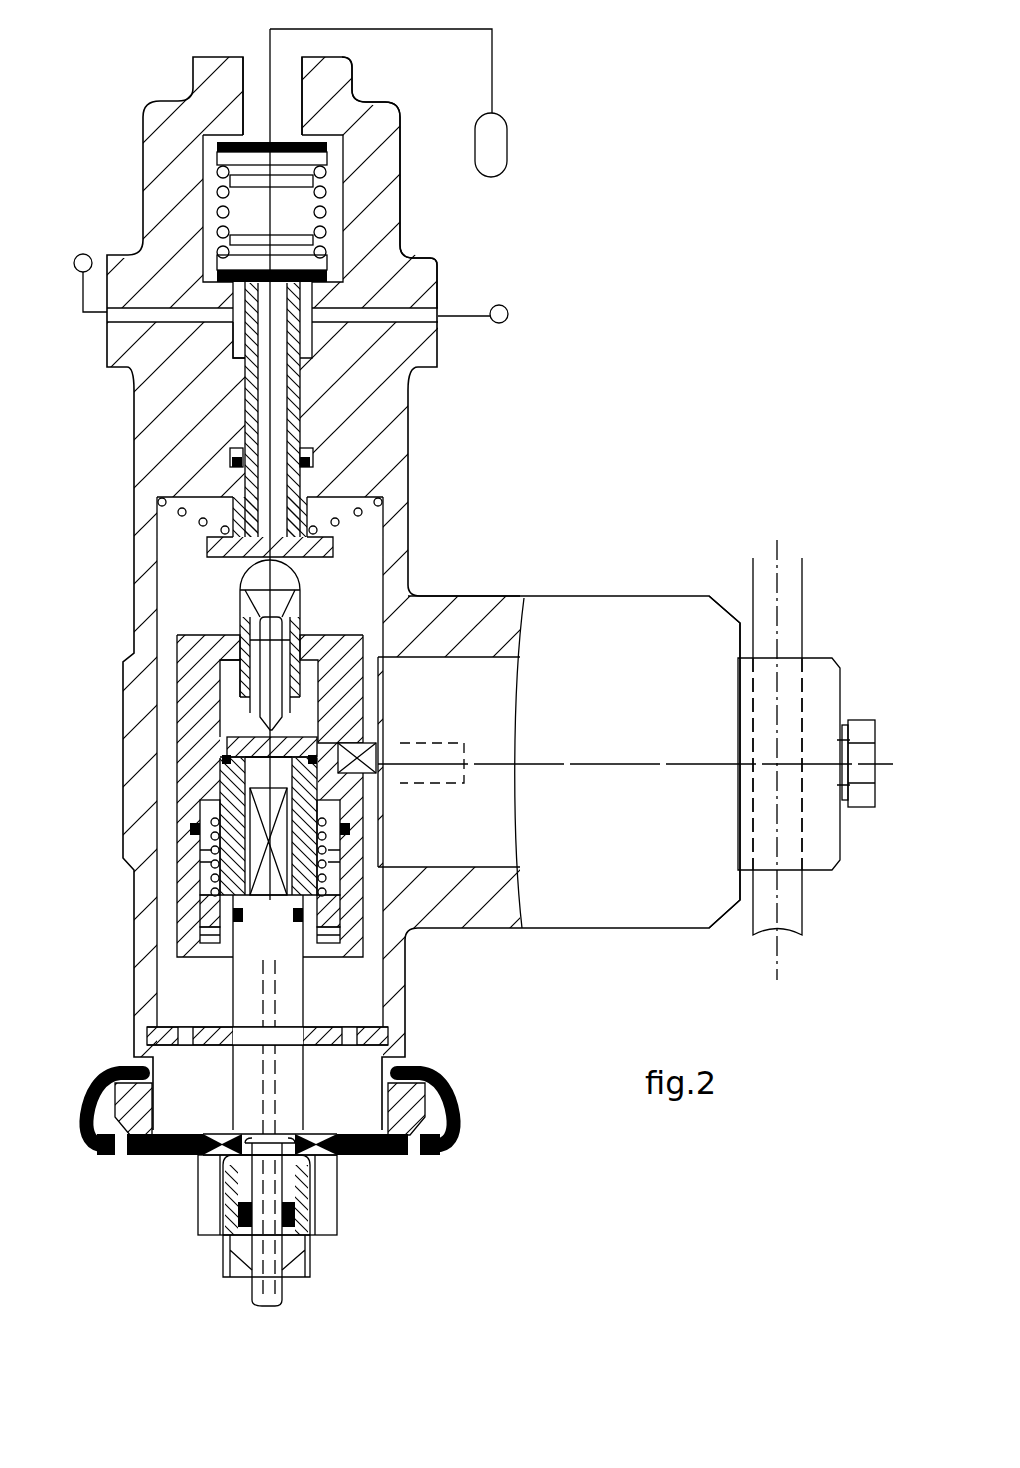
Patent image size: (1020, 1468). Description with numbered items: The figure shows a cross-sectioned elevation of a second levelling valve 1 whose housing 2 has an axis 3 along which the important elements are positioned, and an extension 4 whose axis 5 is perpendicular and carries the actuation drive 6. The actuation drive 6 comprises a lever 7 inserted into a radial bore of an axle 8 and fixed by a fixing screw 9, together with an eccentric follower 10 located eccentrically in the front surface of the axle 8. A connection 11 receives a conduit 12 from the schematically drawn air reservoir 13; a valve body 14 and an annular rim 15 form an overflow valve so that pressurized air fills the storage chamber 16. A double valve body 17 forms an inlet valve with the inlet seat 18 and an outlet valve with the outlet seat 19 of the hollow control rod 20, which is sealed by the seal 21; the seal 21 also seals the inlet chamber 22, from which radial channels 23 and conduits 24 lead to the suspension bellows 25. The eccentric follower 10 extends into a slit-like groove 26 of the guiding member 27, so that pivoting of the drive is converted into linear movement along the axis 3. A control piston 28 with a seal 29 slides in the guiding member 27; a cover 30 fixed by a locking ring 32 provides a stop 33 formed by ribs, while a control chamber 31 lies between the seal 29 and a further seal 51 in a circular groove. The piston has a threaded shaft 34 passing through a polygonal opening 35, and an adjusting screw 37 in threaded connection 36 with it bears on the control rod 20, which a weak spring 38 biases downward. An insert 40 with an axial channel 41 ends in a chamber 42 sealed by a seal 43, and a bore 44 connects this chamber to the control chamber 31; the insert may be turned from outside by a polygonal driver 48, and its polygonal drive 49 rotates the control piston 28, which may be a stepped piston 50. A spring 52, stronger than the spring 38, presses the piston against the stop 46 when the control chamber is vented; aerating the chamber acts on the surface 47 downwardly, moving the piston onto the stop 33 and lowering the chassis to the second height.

The levelling valve 1 is at (572, 268).
The housing 2 is at (400, 313).
The axis 3 is at (270, 413).
The extension 4 is at (560, 612).
The axis 5 is at (540, 763).
The actuation drive 6 is at (808, 597).
The lever 7 is at (758, 605).
The axle 8 is at (504, 848).
The fixing screw 9 is at (864, 735).
The eccentric follower 10 is at (425, 727).
The connection 11 is at (262, 76).
The conduit 12 is at (383, 30).
The air reservoir 13 is at (493, 128).
The valve body 14 is at (320, 157).
The annular rim 15 is at (377, 101).
The storage chamber 16 is at (332, 190).
The double valve body 17 is at (308, 262).
The inlet seat 18 is at (397, 283).
The outlet seat 19 is at (312, 320).
The control rod 20 is at (302, 397).
The seal 21 is at (306, 462).
The inlet chamber 22 is at (242, 340).
The radial channels 23 is at (140, 316).
The conduits 24 is at (95, 314).
The suspension bellows 25 is at (83, 254).
The slit-like groove 26 is at (462, 610).
The guiding member 27 is at (392, 601).
The control piston 28 is at (182, 826).
The seal 29 is at (192, 829).
The cover 30 is at (205, 906).
The control chamber 31 is at (423, 794).
The locking ring 32 is at (200, 938).
The stop 33 is at (205, 855).
The threaded shaft 34 is at (234, 660).
The opening 35 is at (262, 682).
The threaded connection 36 is at (242, 648).
The adjusting screw 37 is at (255, 593).
The spring 38 is at (178, 512).
The insert 40 is at (357, 1157).
The axial channel 41 is at (273, 1068).
The chamber 42 is at (224, 758).
The seal 43 is at (298, 940).
The bore 44 is at (290, 735).
The stop 46 is at (275, 882).
The surface 47 is at (328, 847).
The polygonal driver 48 is at (324, 1212).
The polygonal drive 49 is at (212, 980).
The stepped piston 50 is at (258, 775).
The seal 51 is at (305, 757).
The spring 52 is at (213, 883).